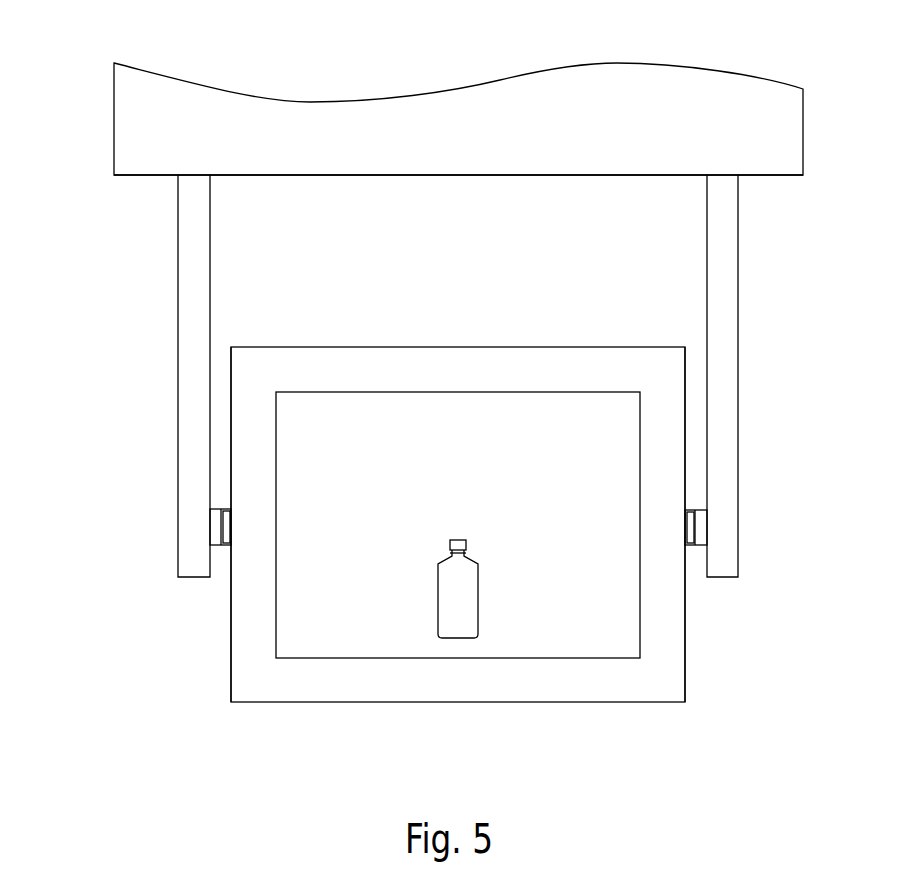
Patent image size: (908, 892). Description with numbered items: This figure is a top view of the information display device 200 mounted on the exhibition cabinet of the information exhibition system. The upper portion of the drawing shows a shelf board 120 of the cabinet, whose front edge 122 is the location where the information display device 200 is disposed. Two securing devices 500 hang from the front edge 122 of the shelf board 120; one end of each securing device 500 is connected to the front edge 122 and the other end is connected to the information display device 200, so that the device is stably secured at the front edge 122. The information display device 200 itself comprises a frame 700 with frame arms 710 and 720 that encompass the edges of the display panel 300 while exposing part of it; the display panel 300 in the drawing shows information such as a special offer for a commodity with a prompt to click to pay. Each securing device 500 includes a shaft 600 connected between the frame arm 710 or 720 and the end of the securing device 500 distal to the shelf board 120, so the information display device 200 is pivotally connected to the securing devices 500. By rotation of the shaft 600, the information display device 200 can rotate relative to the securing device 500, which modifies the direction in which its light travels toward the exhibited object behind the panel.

The shelf board 120 is at (793, 129).
The front edge 122 is at (779, 176).
The information display device 200 is at (445, 524).
The display panel 300 is at (540, 643).
The securing device 500 is at (190, 541).
The shaft 600 is at (695, 545).
The frame 700 is at (362, 692).
The frame arm 710 is at (663, 638).
The frame arm 720 is at (250, 634).